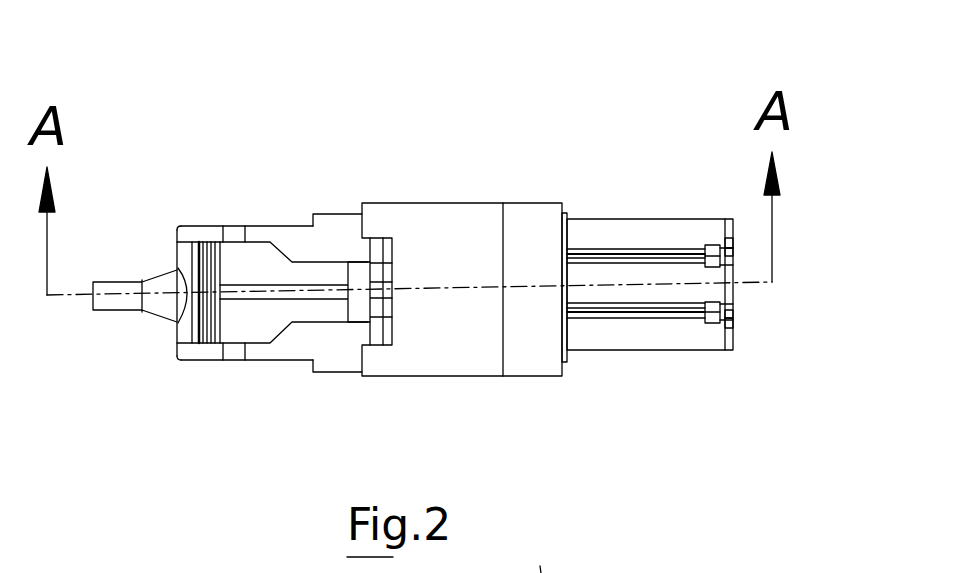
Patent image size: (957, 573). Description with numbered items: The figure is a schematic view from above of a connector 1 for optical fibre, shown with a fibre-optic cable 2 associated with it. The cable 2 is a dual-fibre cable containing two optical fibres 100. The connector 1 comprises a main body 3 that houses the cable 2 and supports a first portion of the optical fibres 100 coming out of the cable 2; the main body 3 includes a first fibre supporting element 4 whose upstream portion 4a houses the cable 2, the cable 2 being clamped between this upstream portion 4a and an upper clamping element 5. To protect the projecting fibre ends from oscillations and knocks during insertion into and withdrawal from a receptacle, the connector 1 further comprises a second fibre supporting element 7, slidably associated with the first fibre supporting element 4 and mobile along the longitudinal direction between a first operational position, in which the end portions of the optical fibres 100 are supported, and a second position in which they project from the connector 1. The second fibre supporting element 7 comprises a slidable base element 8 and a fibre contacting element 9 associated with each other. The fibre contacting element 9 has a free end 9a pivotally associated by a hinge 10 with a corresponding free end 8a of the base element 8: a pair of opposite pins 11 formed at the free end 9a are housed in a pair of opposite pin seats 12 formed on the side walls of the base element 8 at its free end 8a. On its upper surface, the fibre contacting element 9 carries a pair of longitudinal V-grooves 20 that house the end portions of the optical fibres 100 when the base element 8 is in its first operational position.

The connector 1 is at (472, 110).
The fibre-optic cable 2 is at (120, 305).
The main body 3 is at (300, 372).
The first fibre supporting element 4 is at (337, 334).
The upstream portion 4a is at (233, 363).
The upper clamping element 5 is at (250, 268).
The second fibre supporting element 7 is at (565, 381).
The slidable base element 8 is at (732, 352).
The free end of the base element 8a is at (739, 354).
The fibre contacting element 9 is at (648, 246).
The free end of the fibre contacting element 9a is at (716, 333).
The hinge 10 is at (738, 245).
The pins 11 is at (738, 253).
The pin seats 12 is at (722, 243).
The longitudinal V-grooves 20 is at (673, 252).
The optical fibres 100 is at (618, 250).